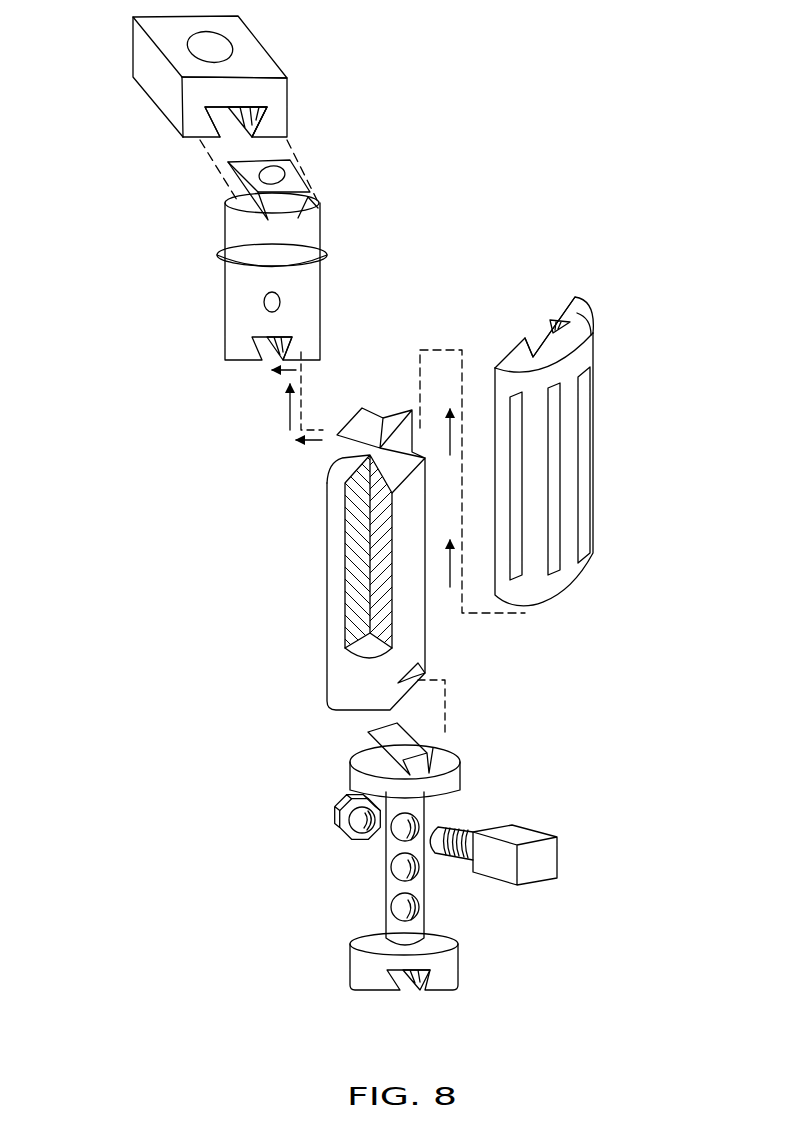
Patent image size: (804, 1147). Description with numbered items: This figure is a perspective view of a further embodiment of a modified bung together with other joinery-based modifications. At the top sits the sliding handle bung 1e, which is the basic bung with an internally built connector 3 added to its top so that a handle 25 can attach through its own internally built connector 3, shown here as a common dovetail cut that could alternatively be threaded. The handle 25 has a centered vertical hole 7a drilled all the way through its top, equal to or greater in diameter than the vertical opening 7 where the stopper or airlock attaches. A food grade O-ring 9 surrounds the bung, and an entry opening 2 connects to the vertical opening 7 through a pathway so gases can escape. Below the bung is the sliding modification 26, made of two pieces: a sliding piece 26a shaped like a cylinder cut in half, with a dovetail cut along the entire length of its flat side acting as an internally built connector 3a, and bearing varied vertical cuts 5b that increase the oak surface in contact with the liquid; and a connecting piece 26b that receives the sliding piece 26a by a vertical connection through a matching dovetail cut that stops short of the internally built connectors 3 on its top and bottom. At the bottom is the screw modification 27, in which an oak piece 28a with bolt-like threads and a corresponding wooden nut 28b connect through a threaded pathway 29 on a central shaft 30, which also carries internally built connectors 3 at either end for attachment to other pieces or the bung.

The vertical hole 7a is at (232, 48).
The internally built connector 3 is at (230, 106).
The handle 25 is at (288, 107).
The vertical opening 7 is at (287, 182).
The food grade O-ring 9 is at (327, 257).
The entry opening 2 is at (280, 302).
The sliding handle bung 1e is at (320, 320).
The internally built connector 3a is at (548, 322).
The sliding piece 26a is at (594, 346).
The varied vertical cuts 5b is at (590, 473).
The connecting piece 26b is at (327, 583).
The sliding modification 26 is at (427, 645).
The screw modification 27 is at (460, 772).
The wooden nut 28b is at (333, 815).
The oak piece 28a is at (557, 855).
The central shaft 30 is at (385, 888).
The pathway 29 is at (418, 907).